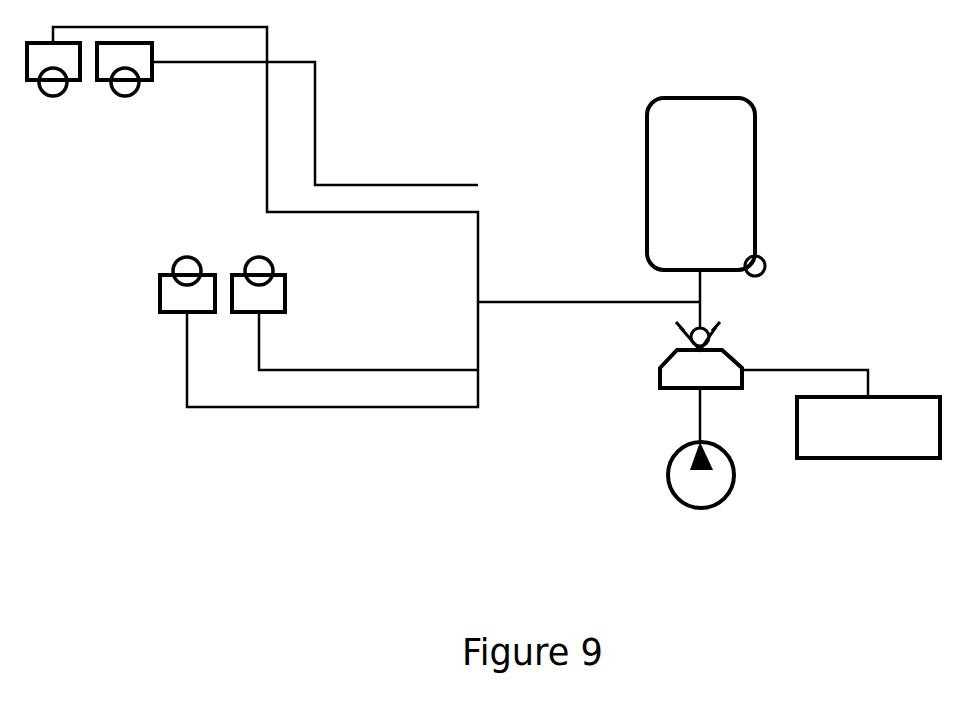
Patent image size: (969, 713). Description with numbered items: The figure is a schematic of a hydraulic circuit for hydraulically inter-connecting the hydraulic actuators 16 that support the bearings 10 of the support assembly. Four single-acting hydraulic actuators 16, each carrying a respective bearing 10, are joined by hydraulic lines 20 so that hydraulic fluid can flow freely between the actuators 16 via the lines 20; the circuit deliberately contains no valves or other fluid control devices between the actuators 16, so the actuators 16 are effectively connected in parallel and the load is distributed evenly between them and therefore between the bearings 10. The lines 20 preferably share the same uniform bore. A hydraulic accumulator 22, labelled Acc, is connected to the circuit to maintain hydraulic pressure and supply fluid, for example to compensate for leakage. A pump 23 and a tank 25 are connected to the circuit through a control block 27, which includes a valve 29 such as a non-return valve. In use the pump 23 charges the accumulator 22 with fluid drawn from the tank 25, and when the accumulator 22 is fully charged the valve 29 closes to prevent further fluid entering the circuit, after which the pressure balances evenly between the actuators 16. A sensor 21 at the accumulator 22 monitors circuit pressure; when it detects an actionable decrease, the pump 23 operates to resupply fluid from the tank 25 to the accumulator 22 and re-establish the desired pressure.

The bearing 10 is at (130, 97).
The hydraulic actuator 16 is at (68, 67).
The hydraulic line 20 is at (267, 171).
The sensor 21 is at (765, 264).
The hydraulic accumulator 22 is at (737, 118).
The pump 23 is at (723, 485).
The tank 25 is at (867, 458).
The control block 27 is at (673, 368).
The valve 29 is at (710, 340).